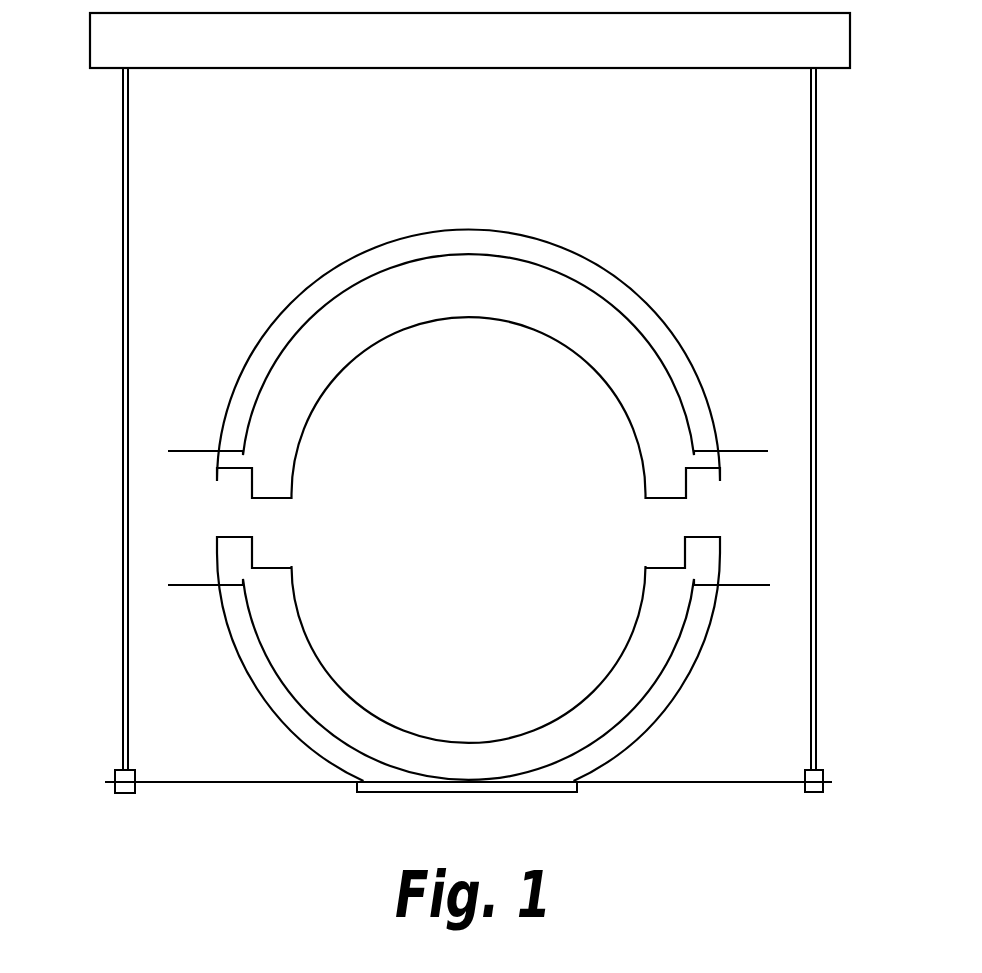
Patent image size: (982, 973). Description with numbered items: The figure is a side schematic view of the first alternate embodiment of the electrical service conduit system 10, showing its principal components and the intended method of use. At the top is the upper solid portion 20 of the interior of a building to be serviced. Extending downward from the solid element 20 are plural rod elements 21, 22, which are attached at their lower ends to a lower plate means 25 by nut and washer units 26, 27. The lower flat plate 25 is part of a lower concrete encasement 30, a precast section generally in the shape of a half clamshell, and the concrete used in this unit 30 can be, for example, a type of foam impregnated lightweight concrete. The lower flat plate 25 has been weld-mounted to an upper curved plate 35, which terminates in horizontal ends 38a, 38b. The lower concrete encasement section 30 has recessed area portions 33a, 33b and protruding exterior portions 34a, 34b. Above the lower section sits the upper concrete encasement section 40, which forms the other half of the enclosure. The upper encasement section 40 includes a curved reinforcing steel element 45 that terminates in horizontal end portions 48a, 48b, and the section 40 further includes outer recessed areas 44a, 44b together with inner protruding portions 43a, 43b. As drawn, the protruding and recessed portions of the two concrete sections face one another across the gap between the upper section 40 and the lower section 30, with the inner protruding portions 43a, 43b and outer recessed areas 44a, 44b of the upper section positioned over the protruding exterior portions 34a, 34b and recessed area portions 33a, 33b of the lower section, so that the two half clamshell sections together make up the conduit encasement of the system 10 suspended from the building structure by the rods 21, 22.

The electrical service conduit system 10 is at (92, 266).
The upper solid portion 20 is at (325, 50).
The rod element 21 is at (122, 458).
The rod element 22 is at (817, 320).
The lower plate means 25 is at (193, 781).
The nut and washer unit 26 is at (115, 775).
The nut and washer unit 27 is at (823, 772).
The lower concrete encasement 30 is at (458, 737).
The recessed area portion 33a is at (277, 565).
The recessed area portion 33b is at (658, 565).
The protruding exterior portion 34a is at (235, 537).
The protruding exterior portion 34b is at (700, 537).
The upper curved plate 35 is at (328, 727).
The horizontal end 38a is at (185, 585).
The horizontal end 38b is at (742, 587).
The upper concrete encasement section 40 is at (610, 288).
The inner protruding portion 43a is at (283, 500).
The inner protruding portion 43b is at (655, 500).
The outer recessed area 44a is at (235, 478).
The outer recessed area 44b is at (703, 468).
The curved reinforcing steel element 45 is at (343, 290).
The horizontal end portion 48a is at (183, 451).
The horizontal end portion 48b is at (753, 449).